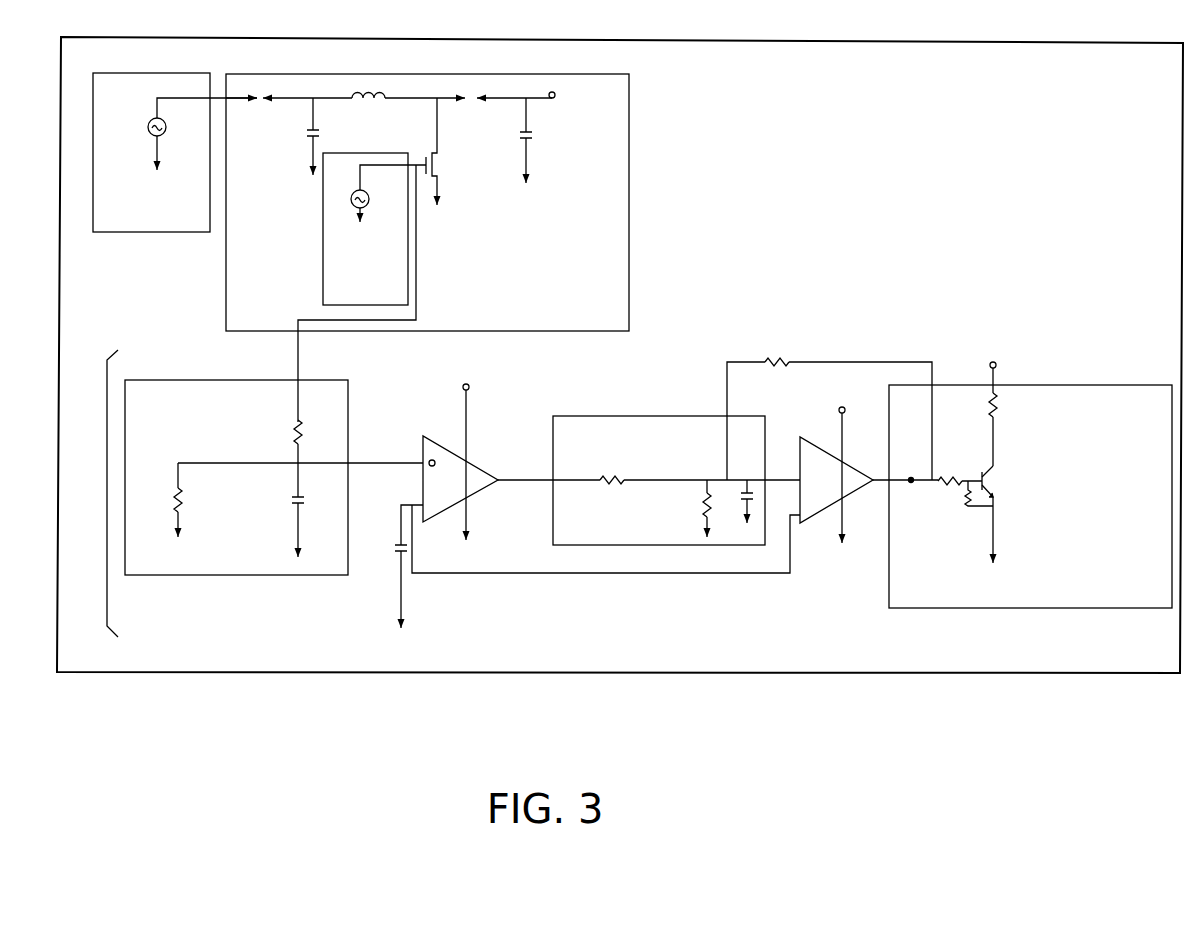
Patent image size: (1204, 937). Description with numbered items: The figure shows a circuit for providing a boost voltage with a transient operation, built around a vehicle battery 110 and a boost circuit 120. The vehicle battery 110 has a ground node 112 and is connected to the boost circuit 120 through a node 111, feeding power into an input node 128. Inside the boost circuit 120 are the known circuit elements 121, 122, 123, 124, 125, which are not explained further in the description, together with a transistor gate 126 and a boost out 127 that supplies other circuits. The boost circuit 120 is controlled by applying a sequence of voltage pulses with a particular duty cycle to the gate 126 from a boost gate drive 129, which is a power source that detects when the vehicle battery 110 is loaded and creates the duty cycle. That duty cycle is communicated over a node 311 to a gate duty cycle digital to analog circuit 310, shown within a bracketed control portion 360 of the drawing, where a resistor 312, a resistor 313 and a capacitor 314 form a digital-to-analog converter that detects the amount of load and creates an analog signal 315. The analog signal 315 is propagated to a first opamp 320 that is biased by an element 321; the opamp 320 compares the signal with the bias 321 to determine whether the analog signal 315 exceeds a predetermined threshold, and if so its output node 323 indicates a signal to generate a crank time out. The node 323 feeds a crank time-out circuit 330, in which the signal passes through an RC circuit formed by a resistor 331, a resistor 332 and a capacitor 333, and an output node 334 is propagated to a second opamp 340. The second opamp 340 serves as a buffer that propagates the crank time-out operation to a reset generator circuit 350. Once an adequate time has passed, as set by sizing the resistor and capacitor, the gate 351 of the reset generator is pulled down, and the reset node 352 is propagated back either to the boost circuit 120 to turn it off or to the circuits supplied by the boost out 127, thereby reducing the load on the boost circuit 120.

The vehicle battery 110 is at (151, 165).
The node 111 is at (207, 96).
The ground node 112 is at (138, 144).
The boost circuit 120 is at (427, 217).
The circuit element 121 is at (299, 110).
The circuit element 122 is at (299, 136).
The circuit element 123 is at (368, 109).
The circuit element 124 is at (426, 110).
The circuit element 125 is at (504, 140).
The transistor gate 126 is at (432, 172).
The boost out 127 is at (532, 101).
The input node 128 is at (241, 86).
The boost gate drive 129 is at (369, 229).
The gate duty cycle digital-to-analog circuit 310 is at (236, 492).
The node 311 is at (357, 293).
The resistor 312 is at (313, 441).
The resistor 313 is at (194, 500).
The capacitor 314 is at (316, 510).
The analog signal 315 is at (306, 450).
The first opamp 320 is at (460, 475).
The bias 321 is at (597, 566).
The node 323 is at (549, 468).
The crank time-out circuit 330 is at (659, 495).
The resistor 331 is at (609, 465).
The resistor 332 is at (776, 441).
The capacitor 333 is at (722, 508).
The output node 334 is at (749, 485).
The second opamp 340 is at (869, 494).
The reset generator circuit 350 is at (1025, 510).
The gate 351 is at (995, 470).
The reset node 352 is at (1018, 414).
The boost control circuit 360 is at (98, 493).